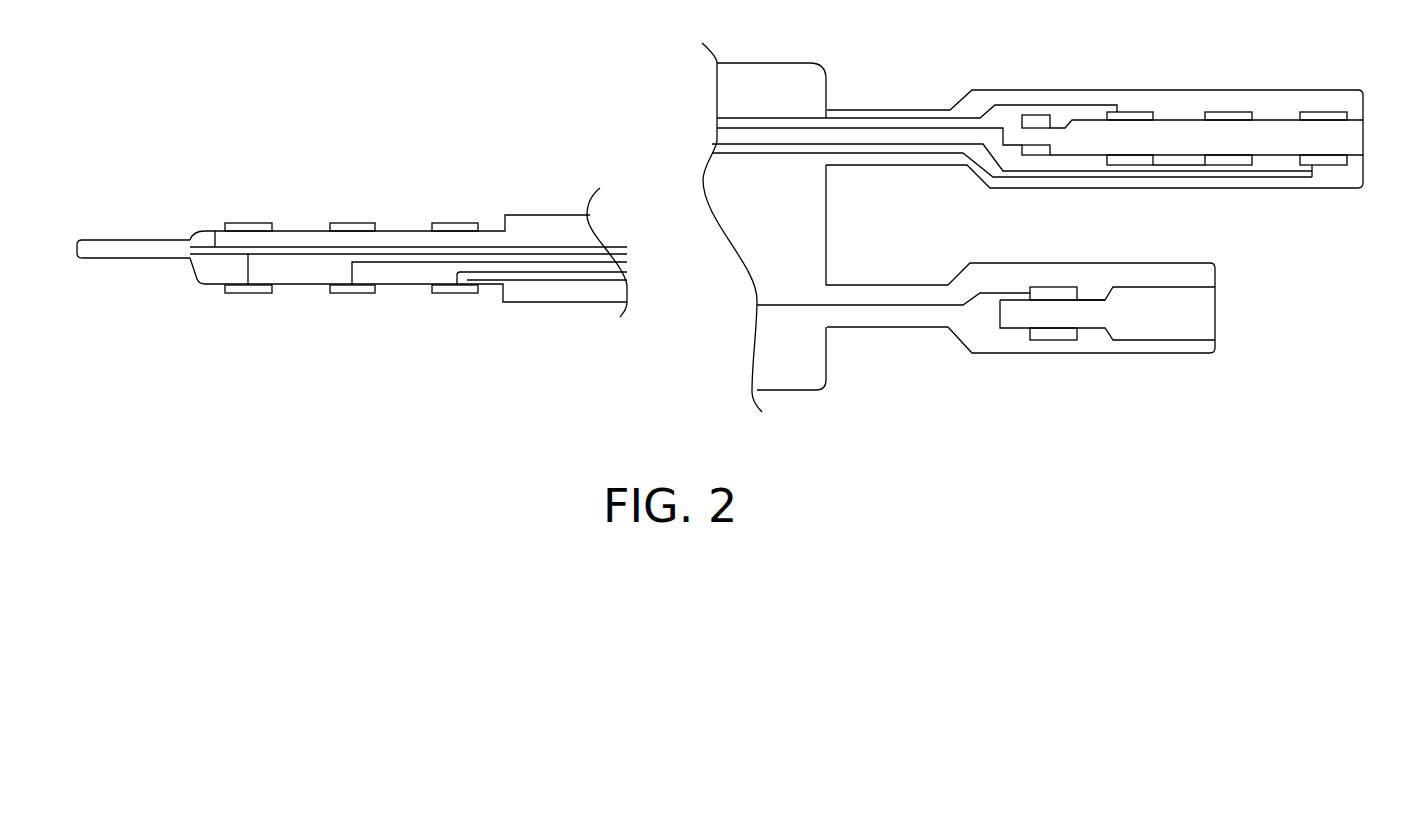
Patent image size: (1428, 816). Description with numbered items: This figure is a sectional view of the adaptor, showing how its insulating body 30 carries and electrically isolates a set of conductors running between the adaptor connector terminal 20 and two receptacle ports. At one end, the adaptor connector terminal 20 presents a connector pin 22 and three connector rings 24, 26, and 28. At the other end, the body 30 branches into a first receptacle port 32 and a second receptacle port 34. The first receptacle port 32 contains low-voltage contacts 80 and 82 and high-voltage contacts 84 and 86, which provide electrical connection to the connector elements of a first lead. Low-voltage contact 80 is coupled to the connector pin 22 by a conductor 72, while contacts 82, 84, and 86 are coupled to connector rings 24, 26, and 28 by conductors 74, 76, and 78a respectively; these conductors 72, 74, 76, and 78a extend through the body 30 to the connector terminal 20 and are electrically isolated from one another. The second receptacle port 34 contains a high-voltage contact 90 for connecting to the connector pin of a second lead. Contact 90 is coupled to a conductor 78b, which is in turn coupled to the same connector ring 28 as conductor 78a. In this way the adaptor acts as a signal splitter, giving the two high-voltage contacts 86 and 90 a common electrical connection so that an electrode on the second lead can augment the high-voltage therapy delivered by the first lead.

The adaptor connector terminal 20 is at (397, 153).
The connector pin 22 is at (117, 238).
The connector ring 24 is at (252, 222).
The connector ring 26 is at (355, 294).
The connector ring 28 is at (441, 295).
The insulating body 30 is at (758, 63).
The first receptacle port 32 is at (1173, 88).
The second receptacle port 34 is at (1105, 263).
The conductor 72 is at (213, 236).
The conductor 74 is at (248, 257).
The conductor 76 is at (347, 266).
The conductor 78a is at (453, 272).
The conductor 78b is at (500, 284).
The low-voltage contact 80 is at (1030, 115).
The low-voltage contact 82 is at (1128, 110).
The high-voltage contact 84 is at (1233, 112).
The high-voltage contact 86 is at (1333, 112).
The high-voltage contact 90 is at (1055, 285).